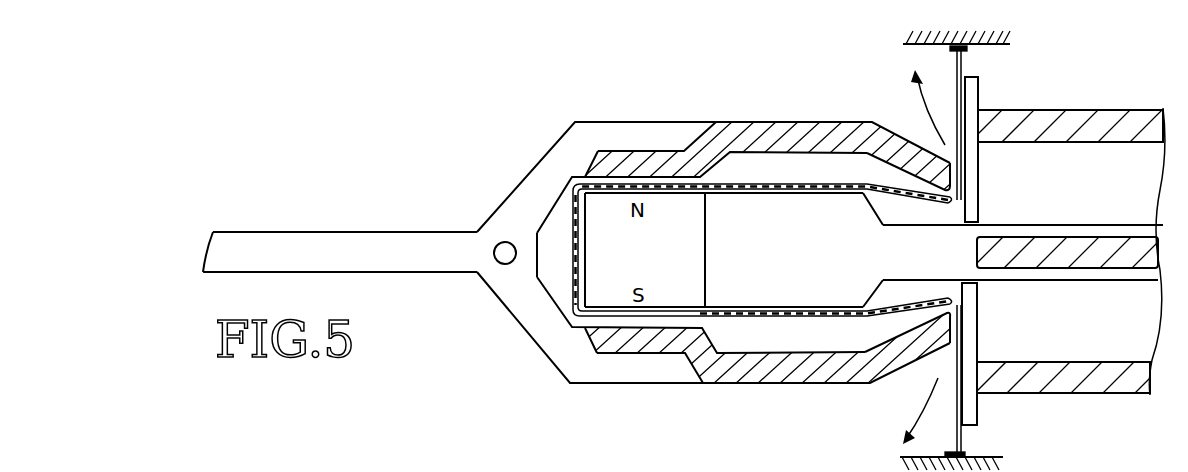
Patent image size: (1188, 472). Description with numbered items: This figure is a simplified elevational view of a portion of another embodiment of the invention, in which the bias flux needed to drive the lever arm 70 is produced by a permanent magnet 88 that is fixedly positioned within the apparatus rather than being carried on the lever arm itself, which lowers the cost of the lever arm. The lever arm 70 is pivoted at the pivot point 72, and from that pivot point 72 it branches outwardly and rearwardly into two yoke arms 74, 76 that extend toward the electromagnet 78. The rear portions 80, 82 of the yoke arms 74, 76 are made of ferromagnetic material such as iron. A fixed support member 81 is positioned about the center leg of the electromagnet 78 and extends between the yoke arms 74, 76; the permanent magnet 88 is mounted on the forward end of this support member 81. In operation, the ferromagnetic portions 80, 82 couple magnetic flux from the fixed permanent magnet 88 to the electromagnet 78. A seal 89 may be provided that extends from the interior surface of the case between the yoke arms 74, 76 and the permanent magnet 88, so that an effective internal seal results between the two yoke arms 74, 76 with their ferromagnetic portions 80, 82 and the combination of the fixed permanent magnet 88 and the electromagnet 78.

The lever arm 70 is at (410, 233).
The pivot point 72 is at (501, 264).
The yoke arm 74 is at (682, 121).
The yoke arm 76 is at (667, 385).
The electromagnet 78 is at (1073, 84).
The rear portion of yoke arm 80 is at (826, 121).
The fixed support member 81 is at (905, 266).
The rear portion of yoke arm 82 is at (847, 376).
The permanent magnet 88 is at (580, 256).
The seal 89 is at (785, 318).